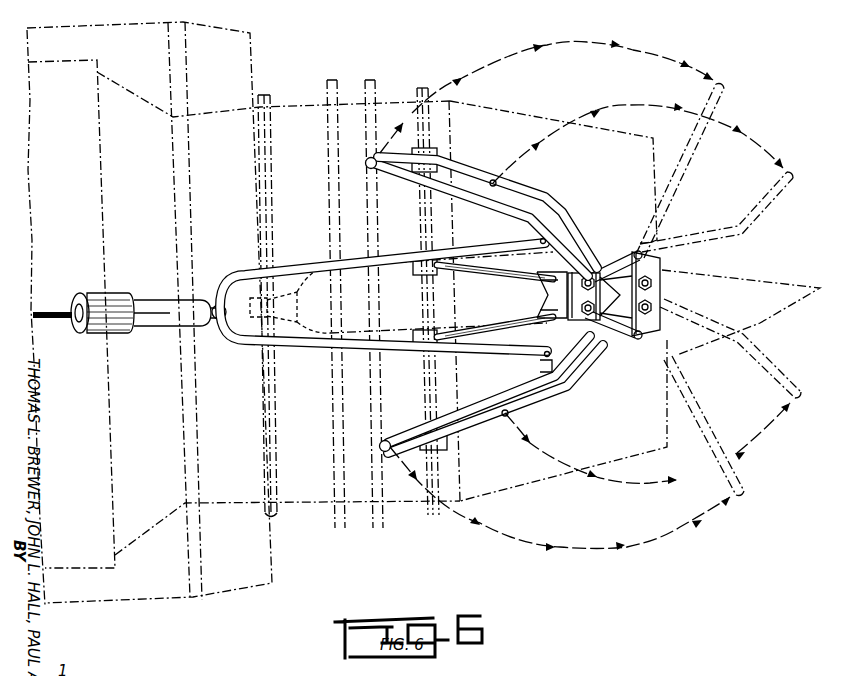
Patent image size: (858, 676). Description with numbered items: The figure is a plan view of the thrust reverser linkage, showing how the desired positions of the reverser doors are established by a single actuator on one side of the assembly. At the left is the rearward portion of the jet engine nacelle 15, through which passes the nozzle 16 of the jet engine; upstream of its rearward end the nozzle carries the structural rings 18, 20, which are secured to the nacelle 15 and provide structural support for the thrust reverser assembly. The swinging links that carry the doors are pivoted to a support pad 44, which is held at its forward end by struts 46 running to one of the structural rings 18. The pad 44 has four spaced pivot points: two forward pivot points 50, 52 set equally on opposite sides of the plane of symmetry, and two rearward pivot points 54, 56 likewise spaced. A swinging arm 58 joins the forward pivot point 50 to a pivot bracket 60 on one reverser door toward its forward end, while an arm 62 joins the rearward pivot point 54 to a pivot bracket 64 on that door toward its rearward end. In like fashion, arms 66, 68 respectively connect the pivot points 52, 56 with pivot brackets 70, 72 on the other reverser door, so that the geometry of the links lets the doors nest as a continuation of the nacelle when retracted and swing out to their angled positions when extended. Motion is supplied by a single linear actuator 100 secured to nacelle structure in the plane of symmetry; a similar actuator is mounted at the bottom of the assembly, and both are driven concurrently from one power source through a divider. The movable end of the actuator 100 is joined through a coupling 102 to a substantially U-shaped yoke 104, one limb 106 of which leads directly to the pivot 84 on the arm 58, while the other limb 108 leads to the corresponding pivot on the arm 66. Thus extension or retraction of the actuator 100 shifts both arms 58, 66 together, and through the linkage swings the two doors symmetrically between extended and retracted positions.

The jet engine nacelle 15 is at (173, 603).
The nozzle 16 is at (650, 451).
The structural ring 18 is at (428, 518).
The structural ring 20 is at (380, 538).
The support pad 44 is at (540, 298).
The strut 46 is at (487, 278).
The forward pivot point 50 is at (597, 353).
The forward pivot point 52 is at (597, 280).
The rearward pivot point 54 is at (662, 311).
The rearward pivot point 56 is at (662, 288).
The swinging arm 58 is at (472, 418).
The pivot bracket 60 is at (741, 499).
The arm 62 is at (560, 398).
The pivot bracket 64 is at (799, 400).
The arm 66 is at (462, 167).
The arm 68 is at (570, 210).
The pivot bracket 70 is at (727, 86).
The pivot bracket 72 is at (791, 178).
The pivot 84 is at (540, 368).
The linear actuator 100 is at (146, 294).
The coupling ball 102 is at (212, 292).
The U-shaped yoke 104 is at (297, 267).
The yoke limb 106 is at (290, 350).
The yoke limb 108 is at (353, 258).